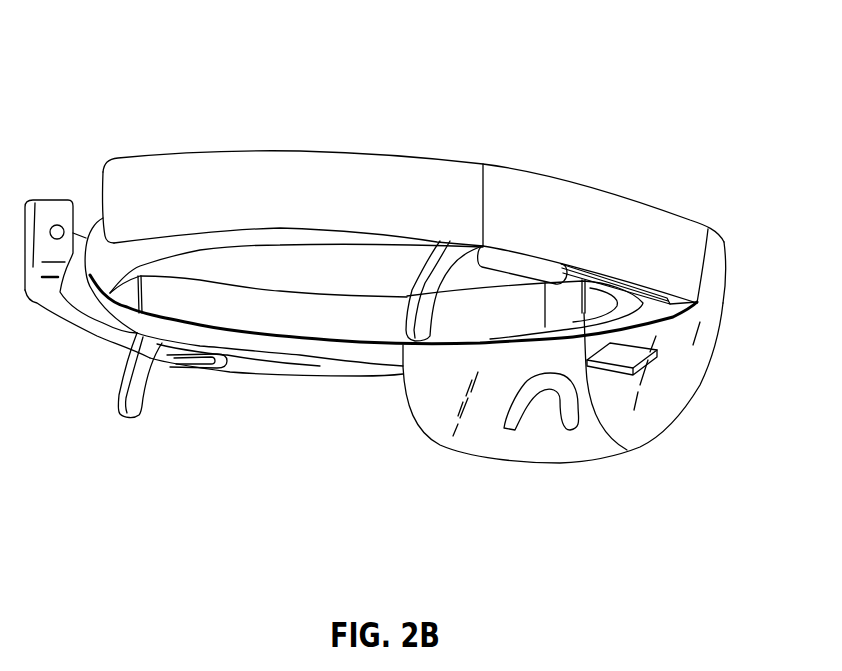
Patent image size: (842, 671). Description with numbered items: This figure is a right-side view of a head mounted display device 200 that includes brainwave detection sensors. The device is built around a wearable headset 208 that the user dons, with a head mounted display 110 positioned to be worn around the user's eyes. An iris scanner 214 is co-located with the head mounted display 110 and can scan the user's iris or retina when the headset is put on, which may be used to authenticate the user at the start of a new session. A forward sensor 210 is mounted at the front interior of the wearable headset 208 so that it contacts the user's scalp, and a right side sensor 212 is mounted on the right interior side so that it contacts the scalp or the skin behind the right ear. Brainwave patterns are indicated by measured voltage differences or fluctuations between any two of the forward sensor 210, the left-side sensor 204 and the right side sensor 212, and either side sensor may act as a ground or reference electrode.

The head mounted display device 200 is at (437, 36).
The wearable headset 208 is at (216, 149).
The forward sensor 210 is at (569, 287).
The right side sensor 212 is at (408, 348).
The left-side sensor 204 is at (128, 423).
The head mounted display 110 is at (468, 462).
The iris scanner 214 is at (623, 379).